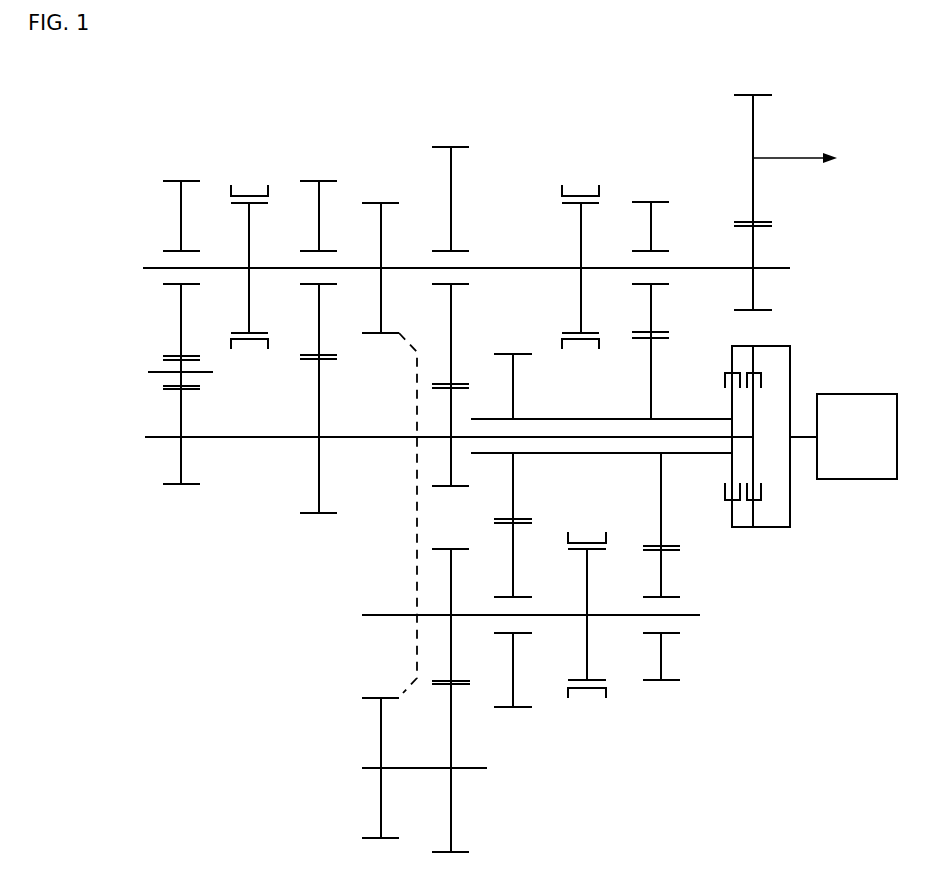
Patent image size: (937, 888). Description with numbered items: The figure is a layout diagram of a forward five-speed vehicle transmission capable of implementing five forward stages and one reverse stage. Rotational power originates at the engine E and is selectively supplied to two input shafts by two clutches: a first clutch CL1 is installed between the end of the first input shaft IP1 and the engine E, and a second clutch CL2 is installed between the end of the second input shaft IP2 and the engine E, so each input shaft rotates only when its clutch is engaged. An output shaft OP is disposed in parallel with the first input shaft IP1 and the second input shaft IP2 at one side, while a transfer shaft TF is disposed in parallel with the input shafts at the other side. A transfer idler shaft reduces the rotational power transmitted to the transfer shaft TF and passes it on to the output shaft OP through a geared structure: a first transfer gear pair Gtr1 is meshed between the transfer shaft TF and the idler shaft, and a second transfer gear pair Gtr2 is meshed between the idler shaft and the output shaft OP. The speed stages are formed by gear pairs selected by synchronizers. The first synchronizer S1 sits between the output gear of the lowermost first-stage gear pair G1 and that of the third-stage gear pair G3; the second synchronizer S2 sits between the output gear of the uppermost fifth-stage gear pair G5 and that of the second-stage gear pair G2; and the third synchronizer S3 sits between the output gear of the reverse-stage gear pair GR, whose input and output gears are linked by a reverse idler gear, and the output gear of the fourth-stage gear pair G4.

The output shaft OP is at (152, 268).
The first input shaft IP1 is at (692, 455).
The second input shaft IP2 is at (158, 437).
The transfer shaft TF is at (698, 617).
The R-stage gear pair GR is at (181, 203).
The third synchronizer S3 is at (251, 186).
The 4-stage gear pair G4 is at (318, 334).
The second transfer gear pair Gtr2 is at (381, 335).
The first transfer gear pair Gtr1 is at (450, 657).
The 2-stage gear pair G2 is at (451, 487).
The second synchronizer S2 is at (583, 186).
The 5-stage gear pair G5 is at (650, 297).
The 1-stage gear pair G1 is at (513, 545).
The first synchronizer S1 is at (585, 693).
The 3-stage gear pair G3 is at (661, 580).
The first clutch CL1 is at (738, 370).
The second clutch CL2 is at (763, 381).
The engine E is at (857, 436).